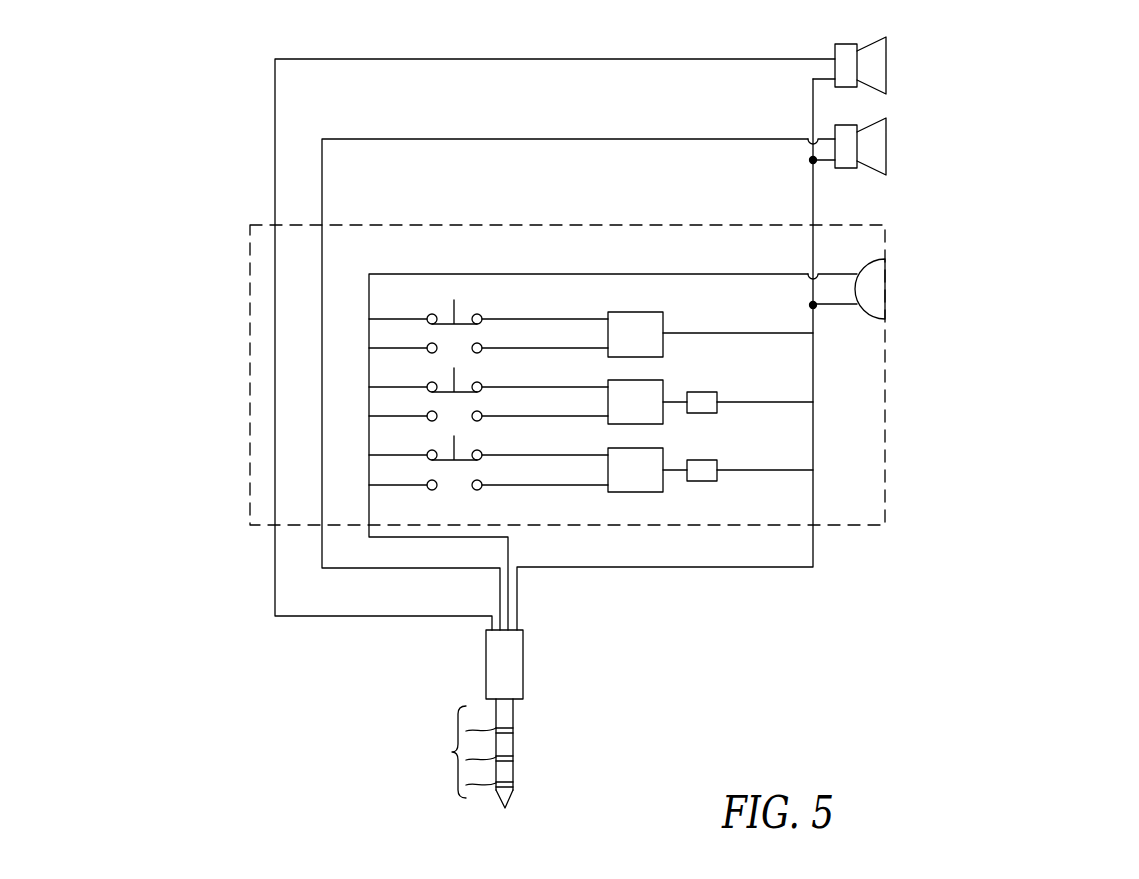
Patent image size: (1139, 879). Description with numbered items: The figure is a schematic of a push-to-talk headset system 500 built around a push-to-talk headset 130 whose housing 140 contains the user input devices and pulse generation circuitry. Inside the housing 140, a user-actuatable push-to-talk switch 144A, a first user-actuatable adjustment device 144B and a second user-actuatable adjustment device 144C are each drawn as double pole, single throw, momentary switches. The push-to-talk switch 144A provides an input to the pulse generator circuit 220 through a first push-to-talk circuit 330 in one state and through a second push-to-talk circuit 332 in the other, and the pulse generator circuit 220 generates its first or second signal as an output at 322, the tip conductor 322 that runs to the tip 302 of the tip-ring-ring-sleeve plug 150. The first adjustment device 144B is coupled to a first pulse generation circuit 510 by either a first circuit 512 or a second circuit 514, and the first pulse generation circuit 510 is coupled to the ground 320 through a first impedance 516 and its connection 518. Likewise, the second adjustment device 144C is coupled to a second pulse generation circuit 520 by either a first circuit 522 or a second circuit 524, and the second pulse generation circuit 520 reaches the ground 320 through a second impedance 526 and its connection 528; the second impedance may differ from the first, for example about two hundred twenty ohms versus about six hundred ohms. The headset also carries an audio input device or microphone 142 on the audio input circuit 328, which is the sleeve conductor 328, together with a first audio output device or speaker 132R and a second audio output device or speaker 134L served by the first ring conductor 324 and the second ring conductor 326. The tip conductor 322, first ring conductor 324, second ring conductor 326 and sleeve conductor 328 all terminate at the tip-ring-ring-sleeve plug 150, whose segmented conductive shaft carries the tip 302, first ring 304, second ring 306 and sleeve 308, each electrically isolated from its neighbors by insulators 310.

The audio system 500 is at (1013, 85).
The push-to-talk headset 130 is at (232, 648).
The housing 140 is at (885, 423).
The first audio output device or speaker 132R is at (886, 66).
The left speaker 134L is at (886, 146).
The audio input device or microphone 142 is at (885, 290).
The user-actuatable push-to-talk switch 144A is at (463, 317).
The first user-actuatable adjustment device 144B is at (463, 385).
The second user-actuatable adjustment device 144C is at (463, 453).
The tip-ring-ring-sleeve plug 150 is at (523, 666).
The pulse generator circuit 220 is at (635, 334).
The first pulse generation circuit 510 is at (635, 402).
The second pulse generation circuit 520 is at (635, 470).
The tip 302 is at (513, 795).
The first ring 304 is at (513, 773).
The second ring 306 is at (513, 748).
The sleeve 308 is at (513, 706).
The insulators 310 is at (464, 748).
The ground 320 is at (813, 553).
The tip conductor 322 is at (675, 333).
The first ring conductor 324 is at (577, 58).
The second ring conductor 326 is at (598, 139).
The audio input circuit 328 is at (590, 274).
The first push-to-talk circuit 330 is at (532, 319).
The second push-to-talk circuit 332 is at (532, 348).
The first circuit 512 is at (532, 387).
The second circuit 514 is at (532, 416).
The first impedance 516 is at (695, 392).
The resistor output line 518 is at (748, 402).
The first circuit 522 is at (532, 455).
The second circuit 524 is at (532, 485).
The second impedance 526 is at (695, 460).
The resistor output line 528 is at (748, 470).